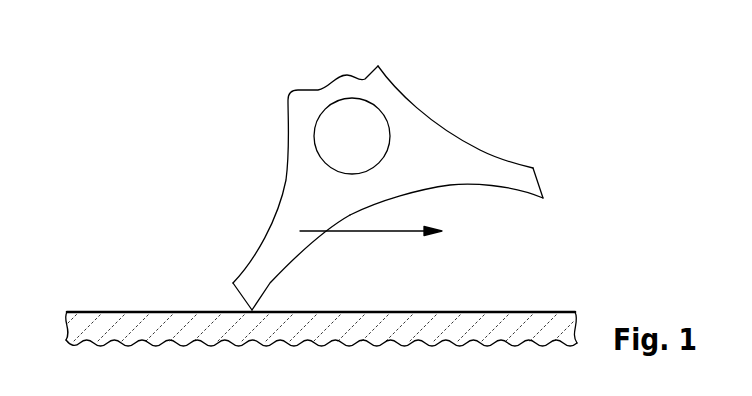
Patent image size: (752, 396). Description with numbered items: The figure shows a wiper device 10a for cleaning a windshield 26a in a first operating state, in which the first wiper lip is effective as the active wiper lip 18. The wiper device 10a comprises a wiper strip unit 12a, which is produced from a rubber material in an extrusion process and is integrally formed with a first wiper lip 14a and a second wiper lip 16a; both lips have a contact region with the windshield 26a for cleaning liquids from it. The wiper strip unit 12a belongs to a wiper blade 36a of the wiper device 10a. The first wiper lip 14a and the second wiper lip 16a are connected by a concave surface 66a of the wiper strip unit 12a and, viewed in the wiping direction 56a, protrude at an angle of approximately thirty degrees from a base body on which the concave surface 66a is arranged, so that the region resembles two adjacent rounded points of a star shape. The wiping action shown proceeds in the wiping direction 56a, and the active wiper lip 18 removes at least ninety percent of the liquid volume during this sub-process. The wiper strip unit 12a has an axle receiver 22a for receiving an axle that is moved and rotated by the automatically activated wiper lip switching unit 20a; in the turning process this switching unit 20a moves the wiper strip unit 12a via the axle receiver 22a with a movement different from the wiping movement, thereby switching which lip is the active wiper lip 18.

The wiper device 10a is at (135, 86).
The automatically activated wiper lip switching unit 20a is at (411, 73).
The wiper strip unit 12a is at (427, 134).
The second wiper lip 16a is at (525, 178).
The wiper blade 36a is at (537, 104).
The axle receiver 22a is at (327, 142).
The active wiper lip 18 is at (268, 267).
The first wiper lip 14a is at (250, 281).
The concave surface 66a is at (461, 190).
The wiping direction 56a is at (369, 232).
The windshield 26a is at (477, 322).